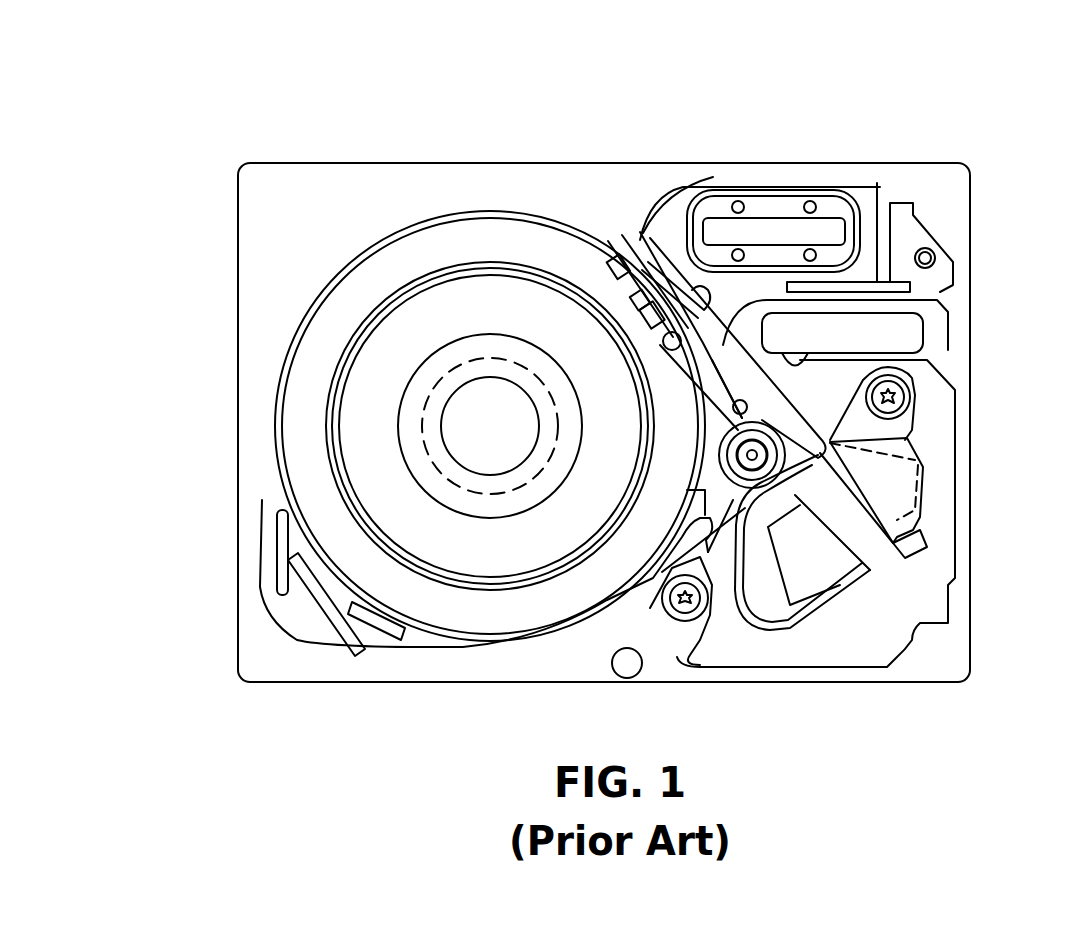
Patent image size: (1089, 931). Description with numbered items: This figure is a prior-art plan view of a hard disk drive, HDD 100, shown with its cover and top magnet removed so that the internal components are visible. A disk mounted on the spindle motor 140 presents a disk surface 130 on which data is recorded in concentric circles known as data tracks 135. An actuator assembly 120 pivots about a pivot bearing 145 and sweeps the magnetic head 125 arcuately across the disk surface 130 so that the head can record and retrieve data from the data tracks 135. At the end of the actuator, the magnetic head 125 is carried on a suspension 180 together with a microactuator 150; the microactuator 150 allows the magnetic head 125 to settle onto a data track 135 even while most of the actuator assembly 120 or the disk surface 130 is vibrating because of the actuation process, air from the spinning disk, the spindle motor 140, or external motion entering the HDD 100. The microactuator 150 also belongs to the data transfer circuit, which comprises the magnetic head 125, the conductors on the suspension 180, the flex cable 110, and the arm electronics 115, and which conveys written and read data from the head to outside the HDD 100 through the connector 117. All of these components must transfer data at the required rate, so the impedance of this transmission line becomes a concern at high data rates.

The HDD 100 is at (250, 140).
The flex cable 110 is at (748, 372).
The arm electronics (A/E) 115 is at (893, 202).
The connector 117 is at (752, 238).
The actuator assembly 120 is at (687, 398).
The magnetic head 125 is at (615, 255).
The disk surface 130 is at (430, 242).
The data tracks 135 is at (340, 480).
The spindle motor 140 is at (490, 426).
The pivot bearing 145 is at (752, 460).
The microactuator 150 is at (620, 262).
The suspension 180 is at (640, 275).